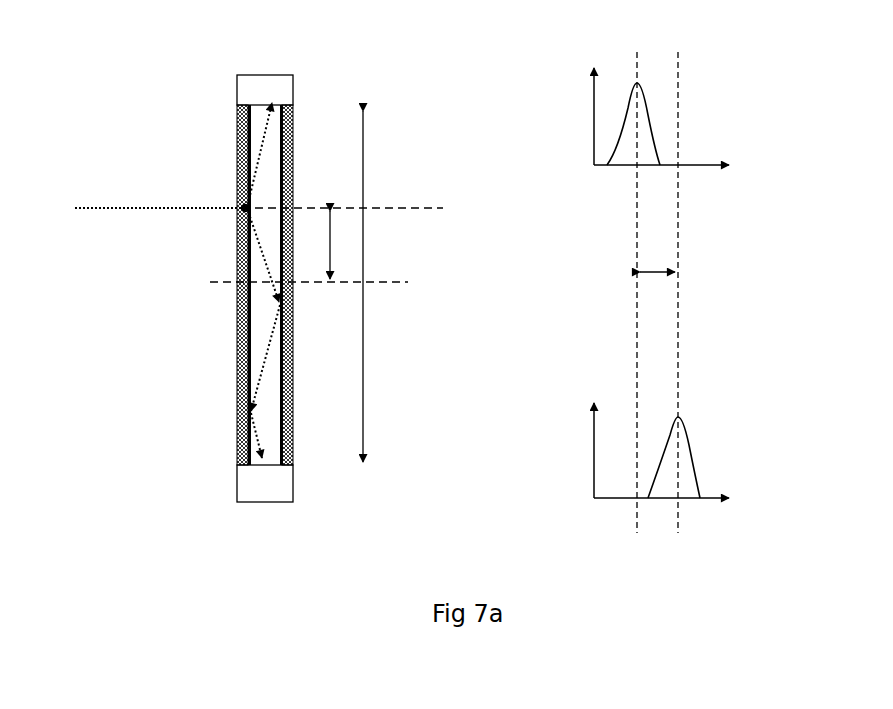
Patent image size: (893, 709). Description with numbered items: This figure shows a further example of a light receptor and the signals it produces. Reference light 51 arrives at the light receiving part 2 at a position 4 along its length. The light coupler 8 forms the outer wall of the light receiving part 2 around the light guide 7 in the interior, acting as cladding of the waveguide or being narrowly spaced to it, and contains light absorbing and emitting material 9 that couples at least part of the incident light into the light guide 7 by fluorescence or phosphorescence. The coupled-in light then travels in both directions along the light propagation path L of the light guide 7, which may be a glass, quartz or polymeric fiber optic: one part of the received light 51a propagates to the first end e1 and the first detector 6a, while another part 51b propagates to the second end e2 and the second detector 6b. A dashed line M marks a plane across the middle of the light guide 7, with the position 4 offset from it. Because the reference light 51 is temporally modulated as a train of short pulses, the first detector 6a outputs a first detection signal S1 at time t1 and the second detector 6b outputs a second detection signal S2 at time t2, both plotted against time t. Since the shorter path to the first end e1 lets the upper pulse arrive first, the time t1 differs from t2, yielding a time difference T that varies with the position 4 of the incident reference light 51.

The light receiving part 2 is at (207, 239).
The first detector 6a is at (307, 82).
The second detector 6b is at (312, 496).
The light guide 7 is at (262, 308).
The reference light 51 is at (158, 177).
The first received light part 51a is at (160, 122).
The second received light part 51b is at (163, 363).
The position 4 is at (427, 237).
The light absorbing and emitting material 9 is at (240, 428).
The light coupler 8 is at (366, 388).
The light propagation path L is at (363, 152).
The middle plane M is at (330, 297).
The time of first detection signal t1 is at (388, 271).
The time of second detection signal t2 is at (421, 313).
The first end e1 is at (347, 37).
The second end e2 is at (329, 544).
The first detection signal S1 is at (682, 113).
The second detection signal S2 is at (682, 450).
The time difference T is at (697, 247).
The time t is at (746, 332).